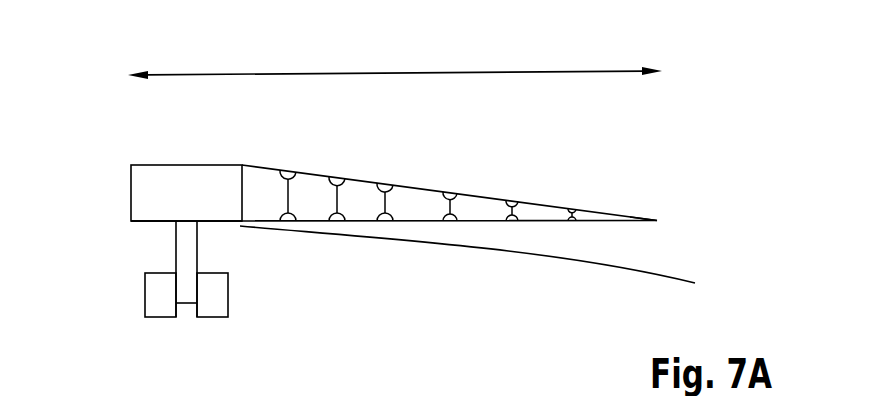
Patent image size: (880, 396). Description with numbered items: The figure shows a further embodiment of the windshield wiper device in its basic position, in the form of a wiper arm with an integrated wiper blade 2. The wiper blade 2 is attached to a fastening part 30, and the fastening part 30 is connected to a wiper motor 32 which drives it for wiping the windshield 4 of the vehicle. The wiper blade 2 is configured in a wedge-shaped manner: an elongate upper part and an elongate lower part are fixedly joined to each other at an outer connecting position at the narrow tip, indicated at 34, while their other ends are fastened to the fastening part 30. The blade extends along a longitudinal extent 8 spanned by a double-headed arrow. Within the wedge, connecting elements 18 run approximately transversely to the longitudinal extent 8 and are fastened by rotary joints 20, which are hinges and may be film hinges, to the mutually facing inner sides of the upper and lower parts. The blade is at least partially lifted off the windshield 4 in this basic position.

The wiper blade 2 is at (575, 148).
The windshield 4 is at (650, 276).
The longitudinal extent 8 is at (408, 71).
The connecting elements 18 is at (289, 190).
The rotary joints 20 is at (288, 170).
The fastening part 30 is at (137, 190).
The wiper motor 32 is at (155, 293).
The tip end 34 is at (658, 219).